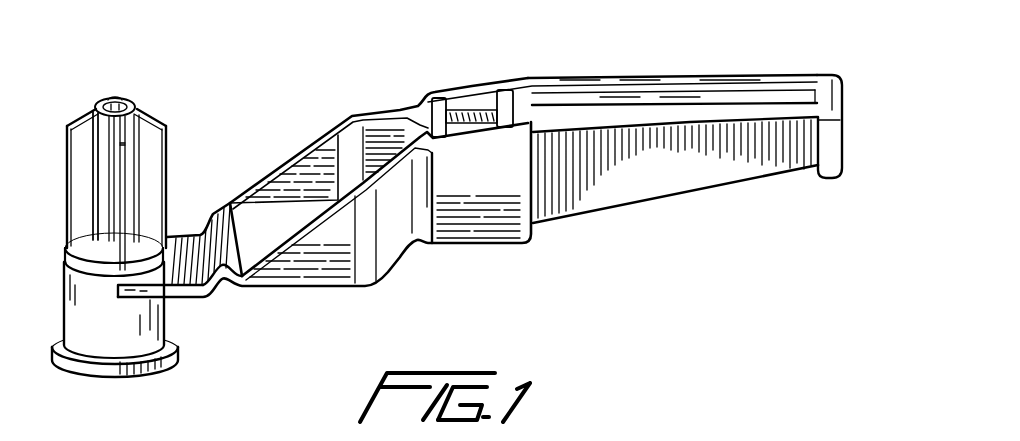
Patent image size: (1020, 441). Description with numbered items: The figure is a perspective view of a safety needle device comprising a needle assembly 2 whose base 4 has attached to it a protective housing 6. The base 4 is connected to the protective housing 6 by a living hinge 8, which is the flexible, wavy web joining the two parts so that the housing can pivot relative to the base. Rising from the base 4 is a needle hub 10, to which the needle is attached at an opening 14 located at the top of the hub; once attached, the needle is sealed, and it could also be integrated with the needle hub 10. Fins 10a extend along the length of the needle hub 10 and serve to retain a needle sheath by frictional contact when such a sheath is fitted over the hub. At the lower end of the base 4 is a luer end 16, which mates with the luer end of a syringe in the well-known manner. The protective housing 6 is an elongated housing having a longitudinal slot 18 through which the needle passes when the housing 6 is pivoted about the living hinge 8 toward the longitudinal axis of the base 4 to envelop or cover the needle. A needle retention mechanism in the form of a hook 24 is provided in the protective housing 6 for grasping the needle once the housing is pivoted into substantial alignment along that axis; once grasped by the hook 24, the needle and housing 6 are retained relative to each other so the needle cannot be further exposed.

The needle assembly 2 is at (663, 340).
The base 4 is at (199, 324).
The protective housing 6 is at (601, 219).
The living hinge 8 is at (224, 289).
The needle hub 10 is at (167, 140).
The fins 10a is at (64, 157).
The opening 14 is at (126, 100).
The luer end 16 is at (177, 363).
The longitudinal slot 18 is at (651, 100).
The hook 24 is at (471, 110).